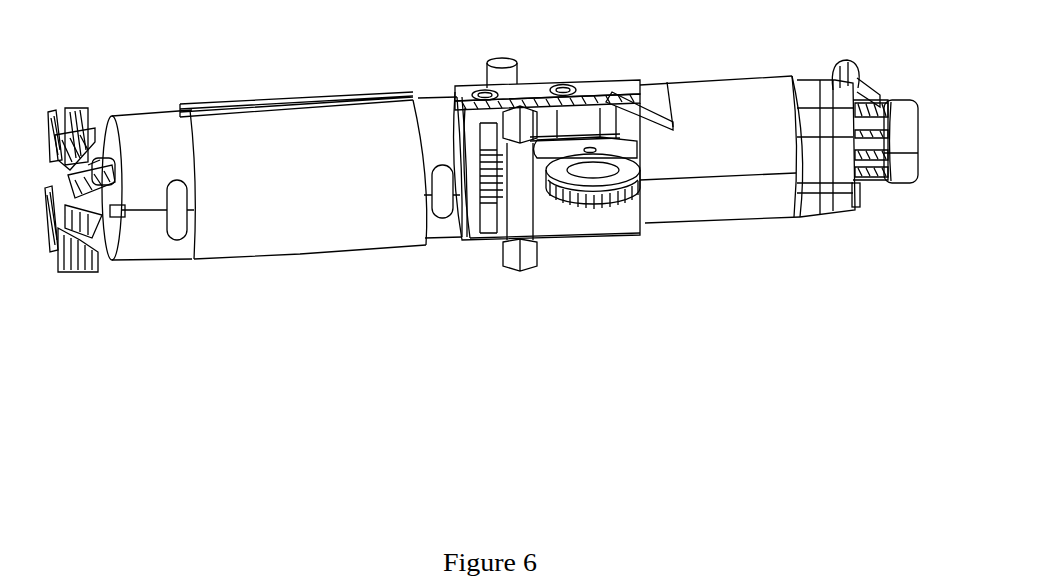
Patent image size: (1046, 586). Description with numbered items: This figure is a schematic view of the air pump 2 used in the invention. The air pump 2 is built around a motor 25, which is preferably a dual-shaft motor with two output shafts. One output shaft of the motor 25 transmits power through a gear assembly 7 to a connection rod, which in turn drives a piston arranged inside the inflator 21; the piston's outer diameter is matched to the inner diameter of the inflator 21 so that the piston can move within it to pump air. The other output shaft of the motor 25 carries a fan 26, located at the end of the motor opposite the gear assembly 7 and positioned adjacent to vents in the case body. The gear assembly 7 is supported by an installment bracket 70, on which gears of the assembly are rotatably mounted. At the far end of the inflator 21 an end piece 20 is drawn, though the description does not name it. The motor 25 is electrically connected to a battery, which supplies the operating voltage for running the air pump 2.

The air pump 2 is at (60, 52).
The fan 26 is at (90, 262).
The motor 25 is at (341, 235).
The gear assembly 7 is at (547, 233).
The installment bracket 70 is at (594, 88).
The inflator 21 is at (728, 200).
The end cap 20 is at (920, 150).